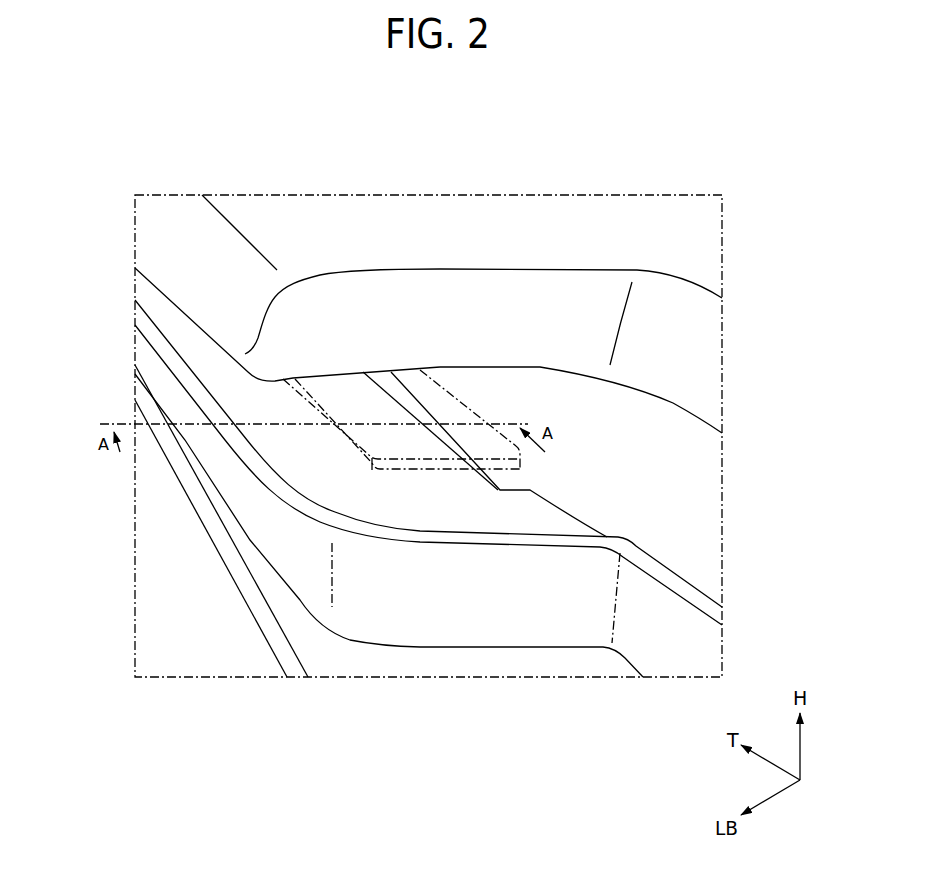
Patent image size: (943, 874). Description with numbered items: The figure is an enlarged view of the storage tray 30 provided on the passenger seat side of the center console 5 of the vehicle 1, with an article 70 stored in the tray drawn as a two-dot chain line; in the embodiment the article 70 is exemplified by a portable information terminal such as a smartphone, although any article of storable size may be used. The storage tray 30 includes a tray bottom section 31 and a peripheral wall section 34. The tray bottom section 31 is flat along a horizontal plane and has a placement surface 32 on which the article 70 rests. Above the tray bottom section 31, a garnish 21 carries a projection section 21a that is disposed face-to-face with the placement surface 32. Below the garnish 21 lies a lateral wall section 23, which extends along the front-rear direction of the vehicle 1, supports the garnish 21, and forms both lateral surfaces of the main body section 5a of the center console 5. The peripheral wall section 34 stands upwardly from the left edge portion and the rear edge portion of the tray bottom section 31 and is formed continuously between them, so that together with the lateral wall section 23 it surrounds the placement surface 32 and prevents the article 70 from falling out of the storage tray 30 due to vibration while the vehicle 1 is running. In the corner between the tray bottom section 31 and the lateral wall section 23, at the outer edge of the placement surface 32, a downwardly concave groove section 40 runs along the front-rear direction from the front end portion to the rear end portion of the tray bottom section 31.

The vehicle 1 is at (233, 193).
The center console 5 is at (533, 222).
The main body section 5a is at (692, 543).
The garnish 21 is at (693, 252).
The projection section 21a is at (413, 228).
The lateral wall section 23 is at (541, 417).
The storage tray 30 is at (336, 652).
The tray bottom section 31 is at (316, 450).
The placement surface 32 is at (431, 506).
The peripheral wall section 34 is at (258, 507).
The groove section 40 is at (514, 481).
The article 70 is at (329, 407).